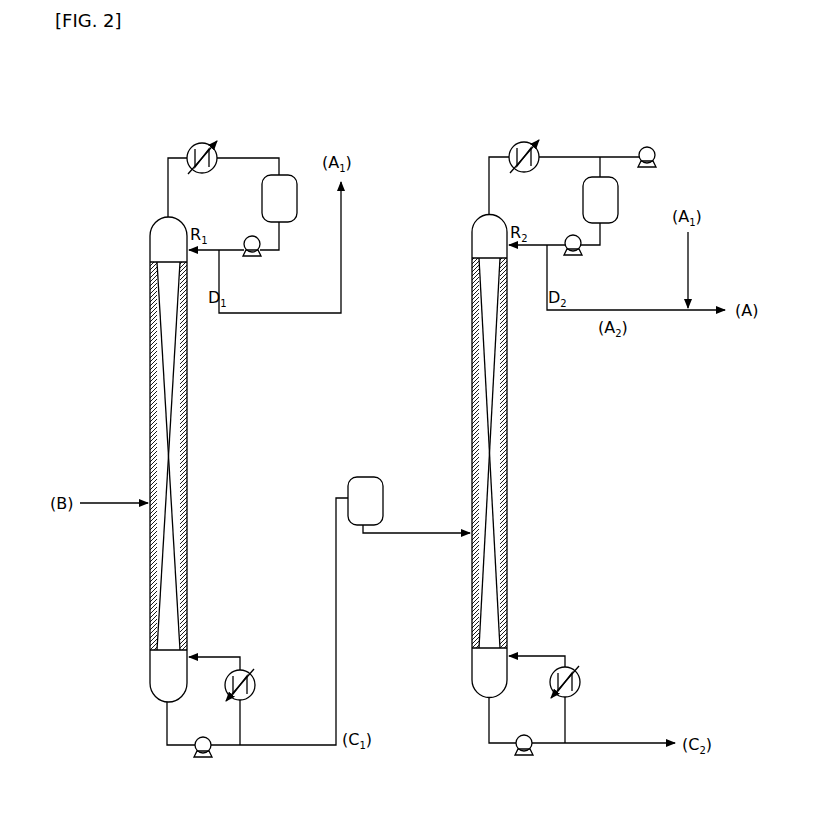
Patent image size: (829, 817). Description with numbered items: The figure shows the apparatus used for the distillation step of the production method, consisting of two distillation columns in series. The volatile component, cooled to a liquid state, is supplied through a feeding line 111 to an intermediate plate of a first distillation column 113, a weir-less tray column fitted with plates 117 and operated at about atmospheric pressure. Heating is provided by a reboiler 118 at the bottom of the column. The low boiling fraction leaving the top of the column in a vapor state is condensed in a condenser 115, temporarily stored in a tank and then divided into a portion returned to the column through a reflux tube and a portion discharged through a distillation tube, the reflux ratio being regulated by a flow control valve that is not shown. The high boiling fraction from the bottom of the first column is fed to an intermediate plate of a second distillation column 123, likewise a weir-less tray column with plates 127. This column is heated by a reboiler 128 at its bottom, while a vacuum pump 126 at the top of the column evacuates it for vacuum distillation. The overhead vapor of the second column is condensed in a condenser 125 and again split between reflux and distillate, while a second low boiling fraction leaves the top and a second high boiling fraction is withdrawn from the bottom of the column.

The feeding line 111 is at (92, 497).
The first distillation column 113 is at (258, 415).
The condenser 115 is at (207, 143).
The plate 117 is at (150, 350).
The reboiler 118 is at (255, 680).
The second distillation column 123 is at (588, 415).
The condenser 125 is at (528, 140).
The vacuum pump 126 is at (652, 142).
The plate 127 is at (472, 385).
The reboiler 128 is at (580, 680).